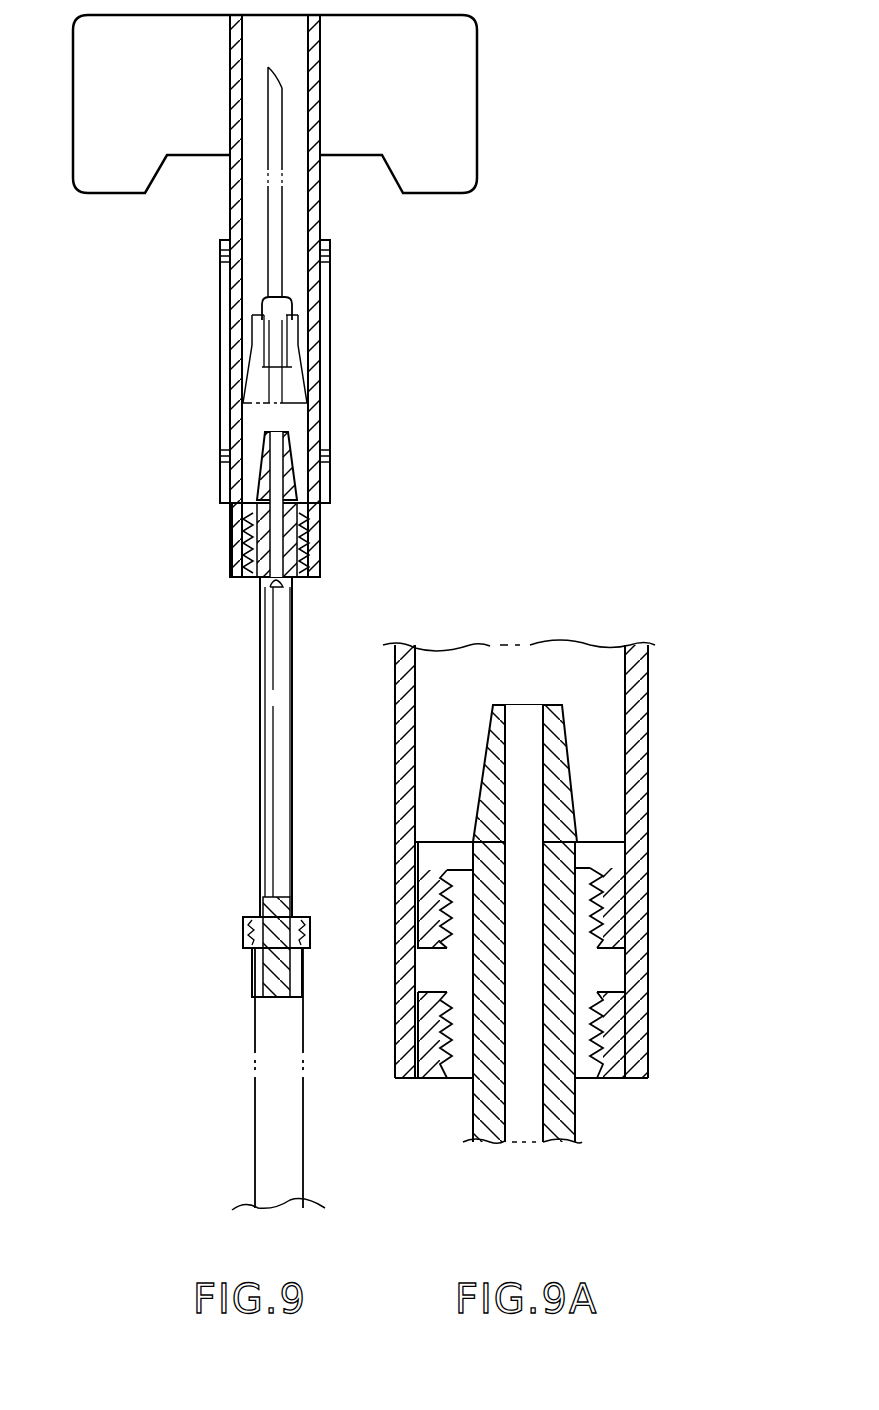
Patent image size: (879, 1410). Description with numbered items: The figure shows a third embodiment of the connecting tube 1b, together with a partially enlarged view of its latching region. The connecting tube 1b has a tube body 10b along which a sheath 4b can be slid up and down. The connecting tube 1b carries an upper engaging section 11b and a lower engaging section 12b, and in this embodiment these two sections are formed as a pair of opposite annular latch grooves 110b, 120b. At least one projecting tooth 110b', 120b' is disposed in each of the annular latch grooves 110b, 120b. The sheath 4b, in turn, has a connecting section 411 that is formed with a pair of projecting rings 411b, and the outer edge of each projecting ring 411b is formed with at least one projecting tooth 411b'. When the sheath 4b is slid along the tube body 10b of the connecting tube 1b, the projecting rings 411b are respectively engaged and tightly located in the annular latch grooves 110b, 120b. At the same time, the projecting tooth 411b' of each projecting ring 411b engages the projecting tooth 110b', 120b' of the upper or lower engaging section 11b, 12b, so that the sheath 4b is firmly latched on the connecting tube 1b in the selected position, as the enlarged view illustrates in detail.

In FIG. 9, the connecting tube 1b is at (258, 703).
In FIG. 9, the sheath 4b is at (222, 346).
In FIG. 9, the tube body 10b is at (272, 765).
In FIG. 9, the upper engaging section 11b is at (255, 500).
In FIG. 9A, the upper engaging section 11b is at (603, 853).
In FIG. 9, the lower engaging section 12b is at (186, 934).
In FIG. 9, the annular latch groove 120b is at (216, 965).
In FIG. 9, the projecting tooth 120b' is at (220, 909).
In FIG. 9A, the annular latch groove 110b is at (573, 944).
In FIG. 9A, the projecting tooth 110b' is at (590, 973).
In FIG. 9, the connecting section 411 is at (253, 547).
In FIG. 9A, the connecting section 411 is at (585, 937).
In FIG. 9A, the projecting ring 411b is at (537, 1043).
In FIG. 9A, the projecting tooth 411b' is at (671, 991).